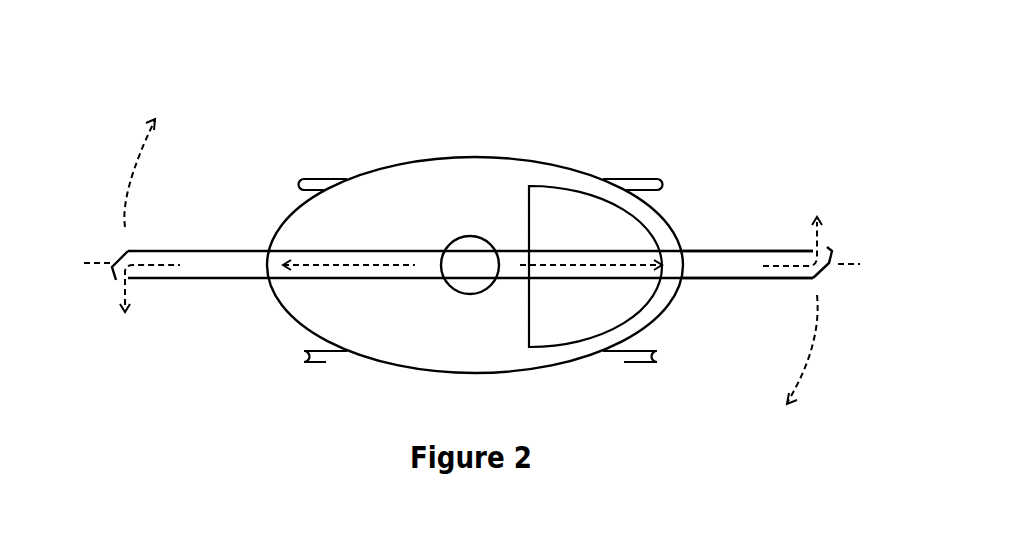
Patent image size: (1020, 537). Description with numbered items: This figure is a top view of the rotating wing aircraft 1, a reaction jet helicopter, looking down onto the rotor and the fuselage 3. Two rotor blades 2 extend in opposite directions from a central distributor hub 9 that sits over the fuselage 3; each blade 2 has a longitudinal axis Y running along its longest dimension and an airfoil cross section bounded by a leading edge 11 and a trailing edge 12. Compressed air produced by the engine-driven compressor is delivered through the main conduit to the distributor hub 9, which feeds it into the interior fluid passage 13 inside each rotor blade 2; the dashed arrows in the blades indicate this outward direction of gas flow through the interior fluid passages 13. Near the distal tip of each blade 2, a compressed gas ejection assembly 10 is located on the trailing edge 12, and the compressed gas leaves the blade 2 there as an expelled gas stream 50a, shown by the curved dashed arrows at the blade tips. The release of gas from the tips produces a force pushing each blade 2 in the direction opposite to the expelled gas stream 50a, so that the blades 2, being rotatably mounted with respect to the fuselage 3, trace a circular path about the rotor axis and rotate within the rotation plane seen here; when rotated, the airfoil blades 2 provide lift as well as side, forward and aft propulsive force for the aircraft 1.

The rotating wing aircraft 1 is at (603, 143).
The rotor blade 2 is at (469, 266).
The fuselage 3 is at (412, 372).
The distributor hub 9 is at (482, 237).
The compressed gas ejection assembly 10 is at (116, 280).
The leading edge 11 is at (250, 250).
The trailing edge 12 is at (250, 280).
The interior fluid passage 13 is at (713, 262).
The expelled gas stream 50a is at (128, 297).